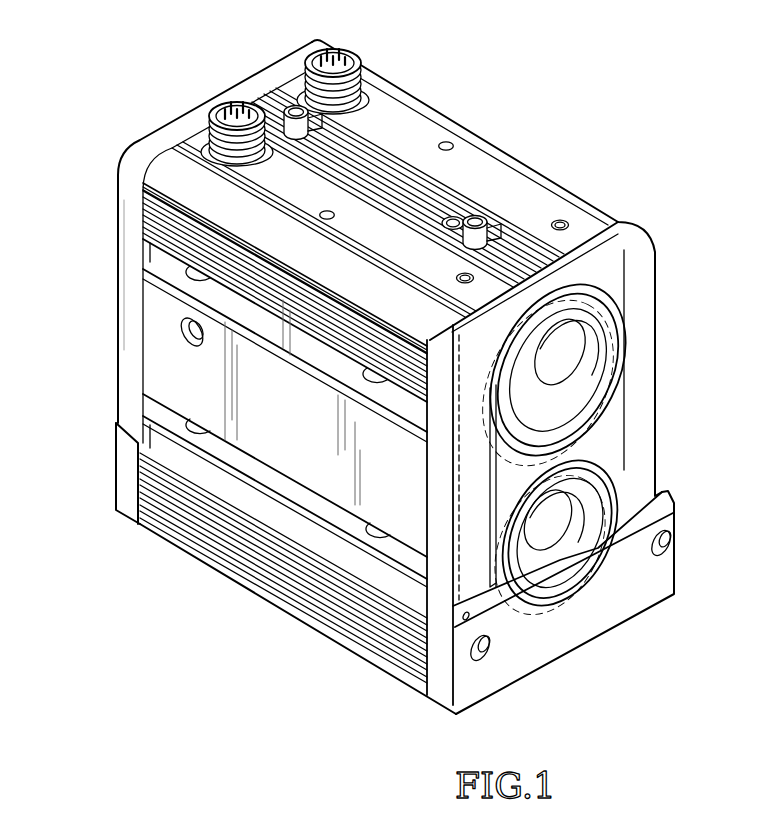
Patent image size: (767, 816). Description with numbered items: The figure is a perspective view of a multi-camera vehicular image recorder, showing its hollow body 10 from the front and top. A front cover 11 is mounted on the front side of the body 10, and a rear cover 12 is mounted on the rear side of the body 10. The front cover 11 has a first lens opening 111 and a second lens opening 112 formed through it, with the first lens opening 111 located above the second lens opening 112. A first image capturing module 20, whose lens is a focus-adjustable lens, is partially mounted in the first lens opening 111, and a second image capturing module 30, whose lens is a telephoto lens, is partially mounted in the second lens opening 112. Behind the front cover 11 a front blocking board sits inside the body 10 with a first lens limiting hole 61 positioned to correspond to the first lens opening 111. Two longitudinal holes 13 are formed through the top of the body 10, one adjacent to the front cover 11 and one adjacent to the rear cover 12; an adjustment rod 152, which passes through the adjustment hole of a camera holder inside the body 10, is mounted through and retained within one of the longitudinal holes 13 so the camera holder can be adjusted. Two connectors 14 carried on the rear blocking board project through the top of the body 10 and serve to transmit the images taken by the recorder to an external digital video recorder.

The body 10 is at (490, 133).
The front cover 11 is at (476, 686).
The rear cover 12 is at (116, 470).
The longitudinal holes 13 is at (243, 104).
The connectors 14 is at (348, 52).
The adjustment rod 152 is at (303, 116).
The first lens limiting hole 61 is at (648, 262).
The first image capturing module 20 is at (565, 347).
The second image capturing module 30 is at (552, 530).
The first lens opening 111 is at (600, 406).
The second lens opening 112 is at (613, 515).